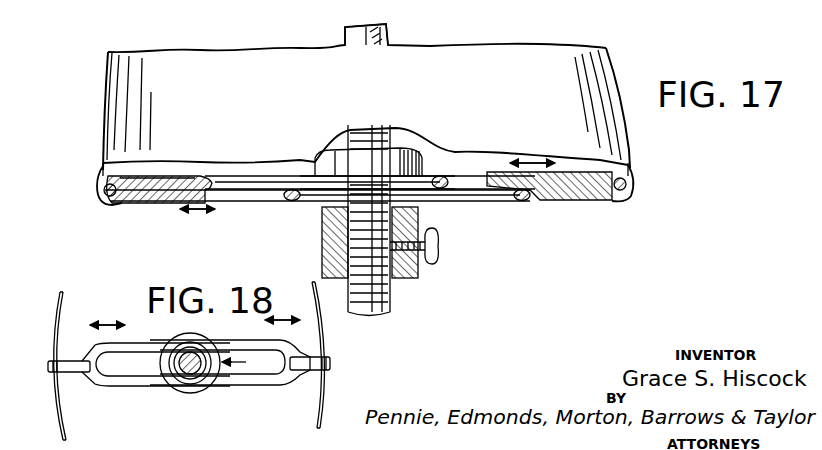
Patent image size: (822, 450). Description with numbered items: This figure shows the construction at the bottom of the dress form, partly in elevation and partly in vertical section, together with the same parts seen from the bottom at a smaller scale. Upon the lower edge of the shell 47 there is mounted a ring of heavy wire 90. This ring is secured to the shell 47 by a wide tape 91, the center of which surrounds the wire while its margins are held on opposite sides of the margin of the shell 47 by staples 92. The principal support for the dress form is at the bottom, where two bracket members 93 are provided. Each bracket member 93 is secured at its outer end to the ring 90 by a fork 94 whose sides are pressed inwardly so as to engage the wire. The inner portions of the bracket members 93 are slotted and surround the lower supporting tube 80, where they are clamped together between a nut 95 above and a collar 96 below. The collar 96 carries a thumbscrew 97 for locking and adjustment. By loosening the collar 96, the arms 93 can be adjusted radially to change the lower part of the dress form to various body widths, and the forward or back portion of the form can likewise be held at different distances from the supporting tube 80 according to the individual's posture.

In FIG. 17, the shell 47 is at (128, 106).
In FIG. 17, the lower supporting tube 80 is at (392, 35).
In FIG. 18, the lower supporting tube 80 is at (196, 379).
In FIG. 17, the ring of heavy wire 90 is at (106, 200).
In FIG. 18, the ring of heavy wire 90 is at (53, 400).
In FIG. 17, the wide tape 91 is at (100, 191).
In FIG. 17, the staples 92 is at (103, 172).
In FIG. 17, the bracket members 93 is at (265, 200).
In FIG. 18, the bracket members 93 is at (140, 388).
In FIG. 17, the fork 94 is at (112, 205).
In FIG. 18, the fork 94 is at (332, 362).
In FIG. 17, the nut 95 is at (318, 160).
In FIG. 17, the collar 96 is at (405, 280).
In FIG. 18, the collar 96 is at (205, 352).
In FIG. 17, the thumbscrew 97 is at (439, 246).
In FIG. 18, the thumbscrew 97 is at (246, 362).